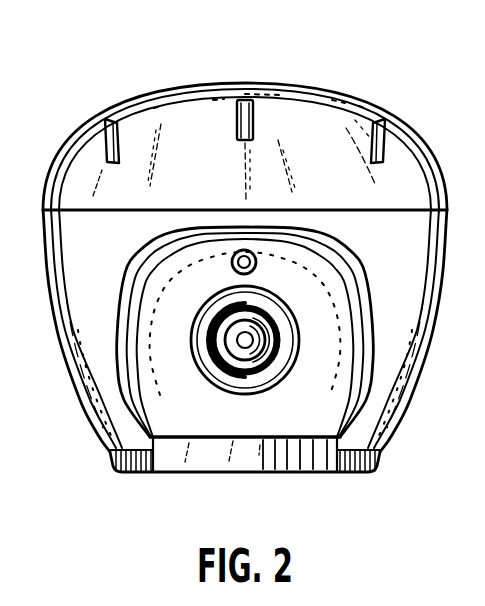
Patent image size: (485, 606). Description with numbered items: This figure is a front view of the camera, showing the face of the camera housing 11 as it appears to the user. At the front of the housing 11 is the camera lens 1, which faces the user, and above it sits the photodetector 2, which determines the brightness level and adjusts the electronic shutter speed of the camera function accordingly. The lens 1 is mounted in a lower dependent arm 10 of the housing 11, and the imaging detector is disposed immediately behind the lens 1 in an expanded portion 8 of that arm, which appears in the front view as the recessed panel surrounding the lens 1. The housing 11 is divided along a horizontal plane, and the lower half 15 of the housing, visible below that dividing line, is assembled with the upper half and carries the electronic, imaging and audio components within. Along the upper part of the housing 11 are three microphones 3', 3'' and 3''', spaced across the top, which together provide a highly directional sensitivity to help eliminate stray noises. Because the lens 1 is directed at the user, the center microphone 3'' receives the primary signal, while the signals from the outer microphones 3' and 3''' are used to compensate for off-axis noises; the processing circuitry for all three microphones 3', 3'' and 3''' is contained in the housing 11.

The camera lens 1 is at (255, 340).
The photodetector 2 is at (256, 263).
The microphone 3' is at (114, 90).
The center microphone 3'' is at (251, 77).
The microphone 3''' is at (384, 93).
The expanded portion 8 is at (169, 388).
The lower dependent arm 10 is at (404, 301).
The camera housing 11 is at (214, 186).
The lower half 15 is at (98, 258).